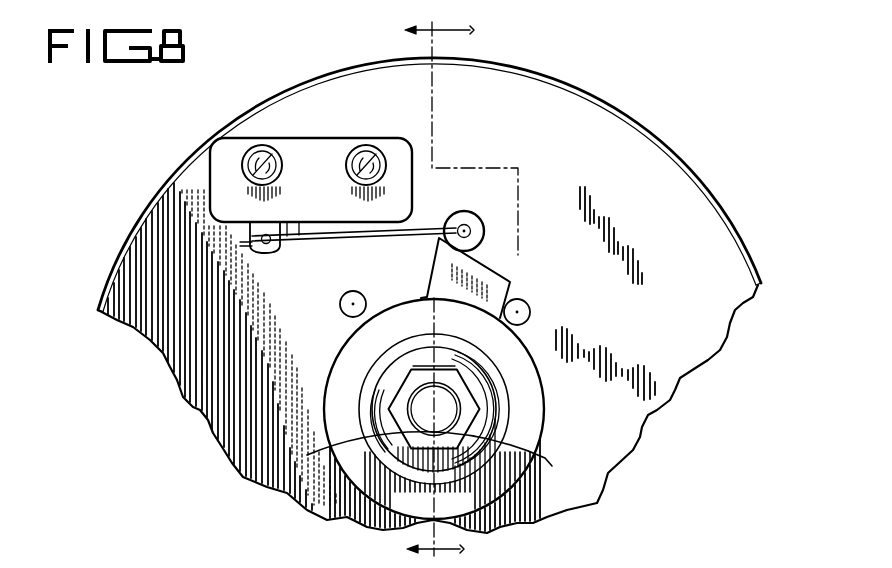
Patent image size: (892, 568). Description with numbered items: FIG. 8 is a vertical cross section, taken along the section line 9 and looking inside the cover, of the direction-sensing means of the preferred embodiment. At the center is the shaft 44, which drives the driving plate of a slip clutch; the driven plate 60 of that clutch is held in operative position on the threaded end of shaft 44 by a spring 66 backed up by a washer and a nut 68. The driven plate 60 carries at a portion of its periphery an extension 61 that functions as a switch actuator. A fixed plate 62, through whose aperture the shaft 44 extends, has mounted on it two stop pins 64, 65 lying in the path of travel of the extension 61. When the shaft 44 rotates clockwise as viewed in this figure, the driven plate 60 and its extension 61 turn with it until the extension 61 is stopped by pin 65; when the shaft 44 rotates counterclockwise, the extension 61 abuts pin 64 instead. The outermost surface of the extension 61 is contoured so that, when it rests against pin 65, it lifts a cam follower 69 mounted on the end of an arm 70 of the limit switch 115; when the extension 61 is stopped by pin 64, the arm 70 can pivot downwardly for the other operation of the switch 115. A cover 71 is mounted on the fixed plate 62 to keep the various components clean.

The section line 9- 9 is at (461, 293).
The shaft 44 is at (528, 464).
The driven plate 60 is at (545, 395).
The extension 61 is at (432, 262).
The fixed plate 62 is at (690, 289).
The stop pin 64 is at (340, 307).
The stop pin 65 is at (530, 306).
The spring 66 is at (372, 378).
The nut 68 is at (402, 428).
The cam follower 69 is at (470, 212).
The arm 70 is at (350, 241).
The cover 71 is at (712, 192).
The limit switch 115 is at (323, 135).